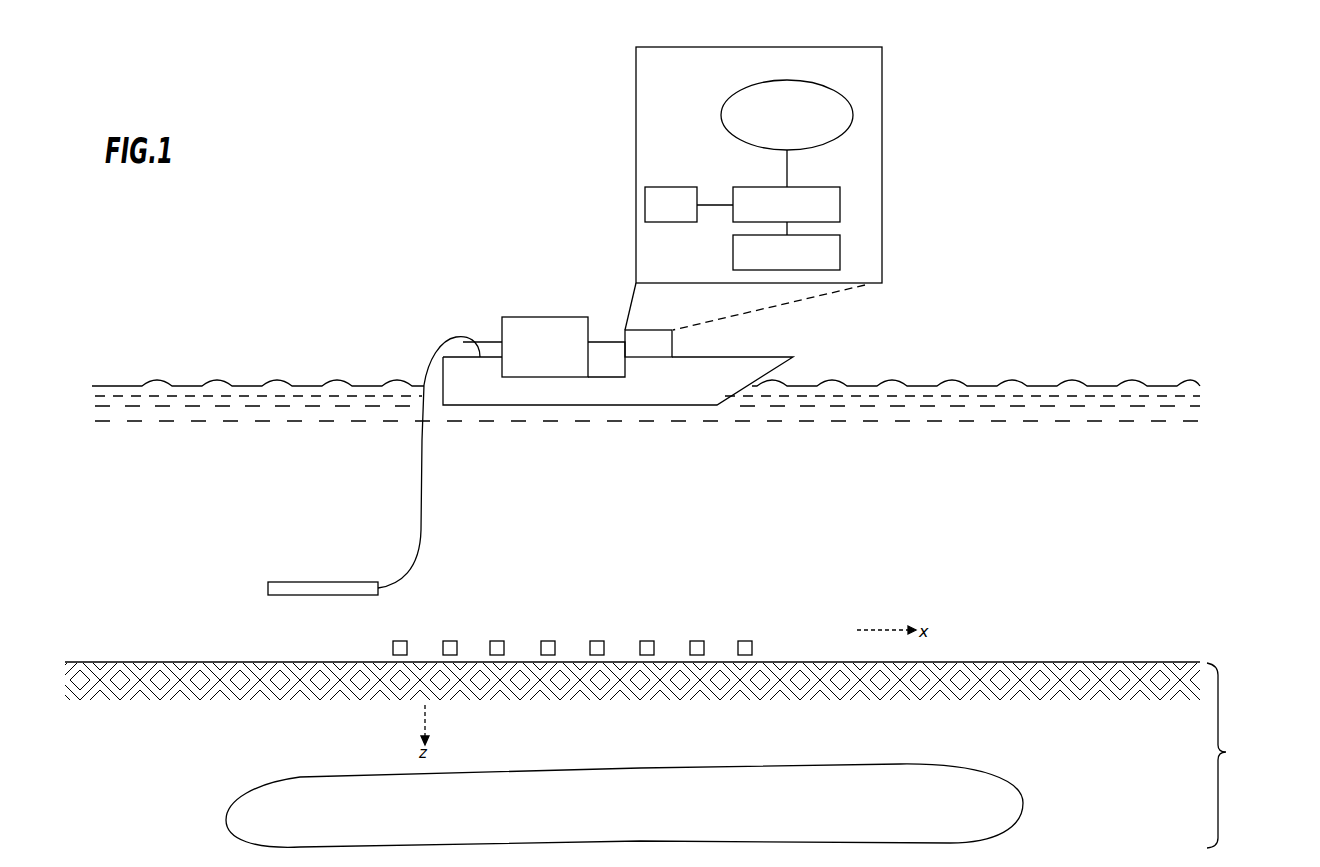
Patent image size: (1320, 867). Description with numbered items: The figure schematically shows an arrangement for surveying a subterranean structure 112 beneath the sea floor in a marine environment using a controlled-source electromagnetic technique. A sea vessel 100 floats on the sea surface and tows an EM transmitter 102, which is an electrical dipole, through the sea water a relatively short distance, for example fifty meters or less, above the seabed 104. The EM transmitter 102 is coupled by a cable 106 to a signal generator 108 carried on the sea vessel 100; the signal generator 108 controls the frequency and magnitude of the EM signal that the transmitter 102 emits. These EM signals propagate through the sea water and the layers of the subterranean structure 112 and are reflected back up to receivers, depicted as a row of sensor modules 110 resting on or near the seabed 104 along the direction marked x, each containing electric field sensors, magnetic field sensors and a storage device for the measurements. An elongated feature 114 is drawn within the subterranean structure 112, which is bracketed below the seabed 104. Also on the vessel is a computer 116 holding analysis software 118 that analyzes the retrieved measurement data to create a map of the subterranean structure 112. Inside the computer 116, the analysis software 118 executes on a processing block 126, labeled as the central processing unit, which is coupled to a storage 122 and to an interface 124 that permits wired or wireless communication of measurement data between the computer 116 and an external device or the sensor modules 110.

The sea vessel 100 is at (758, 383).
The EM transmitter 102 is at (302, 582).
The seabed 104 is at (978, 660).
The cable 106 is at (422, 508).
The signal generator 108 is at (512, 318).
The sensor modules 110 is at (450, 641).
The subterranean structure 112 is at (1226, 752).
The reservoir 114 is at (1010, 805).
The computer 116 is at (673, 343).
The analysis software 118 is at (854, 113).
The storage 122 is at (840, 247).
The interface 124 is at (651, 188).
The CPU 126 is at (840, 205).